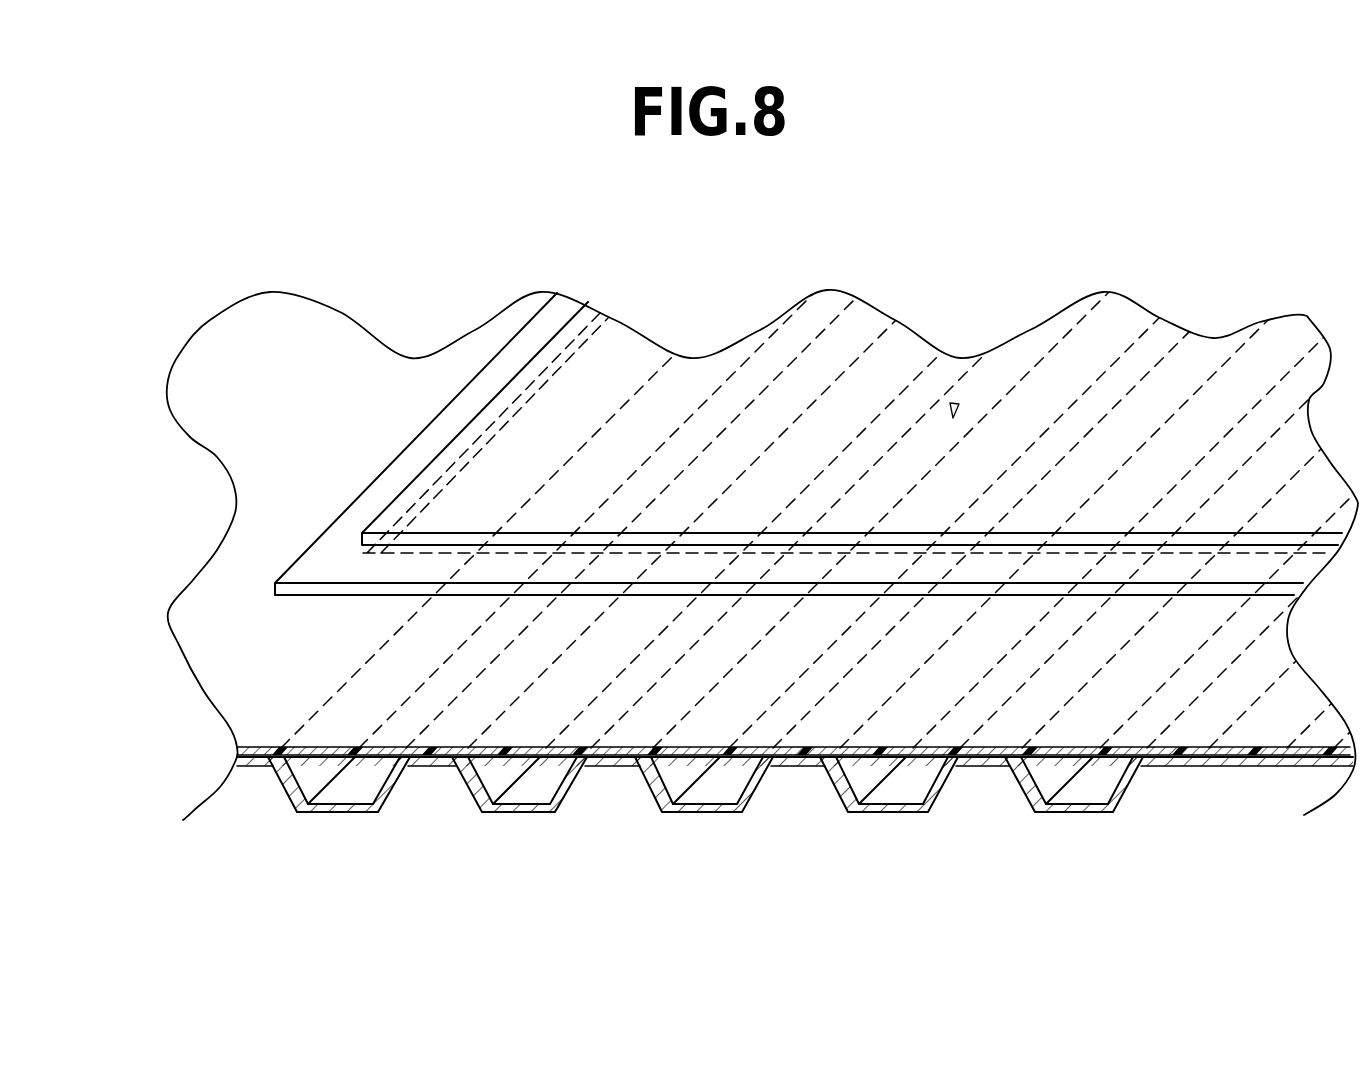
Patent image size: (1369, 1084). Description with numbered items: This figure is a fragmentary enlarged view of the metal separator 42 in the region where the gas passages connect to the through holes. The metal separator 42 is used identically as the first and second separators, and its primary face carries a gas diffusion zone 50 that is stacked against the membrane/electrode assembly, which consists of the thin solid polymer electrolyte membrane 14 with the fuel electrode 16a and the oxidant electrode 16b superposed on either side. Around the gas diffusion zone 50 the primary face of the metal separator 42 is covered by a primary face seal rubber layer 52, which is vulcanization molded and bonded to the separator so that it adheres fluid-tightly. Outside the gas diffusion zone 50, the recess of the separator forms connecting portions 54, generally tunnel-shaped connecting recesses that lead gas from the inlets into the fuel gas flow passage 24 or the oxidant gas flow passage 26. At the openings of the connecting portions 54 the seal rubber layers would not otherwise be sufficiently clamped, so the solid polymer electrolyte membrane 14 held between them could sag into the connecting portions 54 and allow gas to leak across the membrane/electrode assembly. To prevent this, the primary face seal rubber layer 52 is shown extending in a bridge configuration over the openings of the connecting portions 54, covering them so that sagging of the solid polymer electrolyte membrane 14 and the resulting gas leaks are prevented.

The solid polymer electrolyte membrane 14 is at (337, 557).
The oxidant electrode 16b is at (696, 427).
The fuel electrode 16a is at (451, 506).
The fuel gas flow passage 24 is at (825, 490).
The oxidant gas flow passage 26 is at (635, 490).
The metal separator 42 is at (795, 799).
The gas diffusion zone 50 is at (953, 408).
The primary face seal rubber layer 52 is at (282, 760).
The connecting portions 54 is at (707, 788).